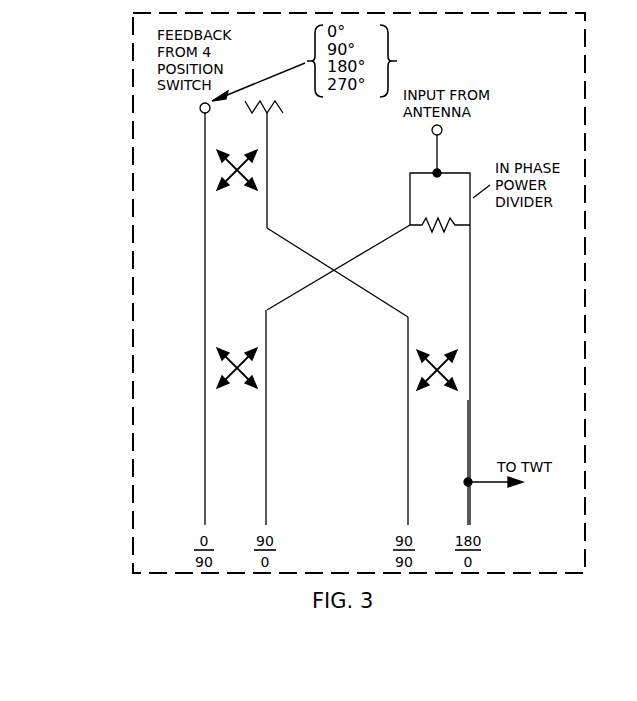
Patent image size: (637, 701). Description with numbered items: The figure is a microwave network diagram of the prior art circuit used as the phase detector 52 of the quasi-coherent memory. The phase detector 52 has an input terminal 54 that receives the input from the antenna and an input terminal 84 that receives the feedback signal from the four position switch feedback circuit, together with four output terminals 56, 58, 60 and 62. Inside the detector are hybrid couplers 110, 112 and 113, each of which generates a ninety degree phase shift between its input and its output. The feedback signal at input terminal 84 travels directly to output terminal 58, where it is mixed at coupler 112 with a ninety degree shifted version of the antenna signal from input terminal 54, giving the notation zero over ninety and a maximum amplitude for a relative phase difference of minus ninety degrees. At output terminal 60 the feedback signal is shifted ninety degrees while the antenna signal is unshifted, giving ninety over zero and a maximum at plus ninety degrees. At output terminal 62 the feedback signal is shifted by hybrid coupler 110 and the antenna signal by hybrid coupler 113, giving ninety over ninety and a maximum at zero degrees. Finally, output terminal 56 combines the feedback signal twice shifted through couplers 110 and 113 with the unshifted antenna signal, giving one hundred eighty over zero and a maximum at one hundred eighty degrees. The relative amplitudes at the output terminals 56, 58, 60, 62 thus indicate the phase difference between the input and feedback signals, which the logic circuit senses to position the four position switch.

The phase detector 52 is at (131, 130).
The input terminal 84 is at (198, 112).
The input terminal 54 is at (445, 130).
The hybrid coupler 110 is at (272, 160).
The hybrid coupler 112 is at (262, 368).
The hybrid coupler 113 is at (458, 370).
The output terminal 58 is at (207, 468).
The output terminal 60 is at (262, 428).
The output terminal 62 is at (409, 485).
The output terminal 56 is at (466, 437).